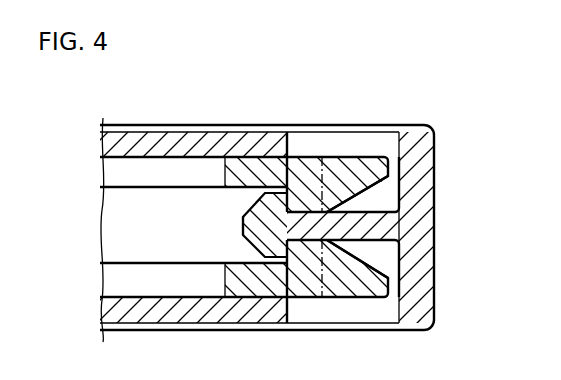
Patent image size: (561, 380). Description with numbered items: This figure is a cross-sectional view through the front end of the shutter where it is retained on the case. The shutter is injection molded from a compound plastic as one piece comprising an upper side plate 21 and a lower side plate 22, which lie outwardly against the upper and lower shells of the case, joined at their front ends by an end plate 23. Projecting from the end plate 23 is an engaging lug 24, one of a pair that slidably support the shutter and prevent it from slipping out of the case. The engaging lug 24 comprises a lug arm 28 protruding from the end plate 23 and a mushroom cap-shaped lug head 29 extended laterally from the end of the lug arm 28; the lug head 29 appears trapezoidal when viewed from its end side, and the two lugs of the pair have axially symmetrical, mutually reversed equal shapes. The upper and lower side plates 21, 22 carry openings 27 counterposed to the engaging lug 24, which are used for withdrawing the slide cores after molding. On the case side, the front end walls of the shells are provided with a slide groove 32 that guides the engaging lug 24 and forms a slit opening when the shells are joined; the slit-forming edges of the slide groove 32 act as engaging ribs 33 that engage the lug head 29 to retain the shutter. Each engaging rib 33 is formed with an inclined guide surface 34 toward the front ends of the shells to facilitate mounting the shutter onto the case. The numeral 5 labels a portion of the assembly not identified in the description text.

The tube bore boundary 5 is at (108, 173).
The upper side plate 21 is at (127, 138).
The lower side plate 22 is at (130, 307).
The end plate 23 is at (437, 300).
The engaging lug 24 is at (236, 212).
The opening 27 is at (407, 143).
The lug arm 28 is at (388, 188).
The lug head 29 is at (321, 160).
The slide groove 32 is at (388, 248).
The engaging rib 33 is at (242, 232).
The inclined guide surface 34 is at (400, 178).